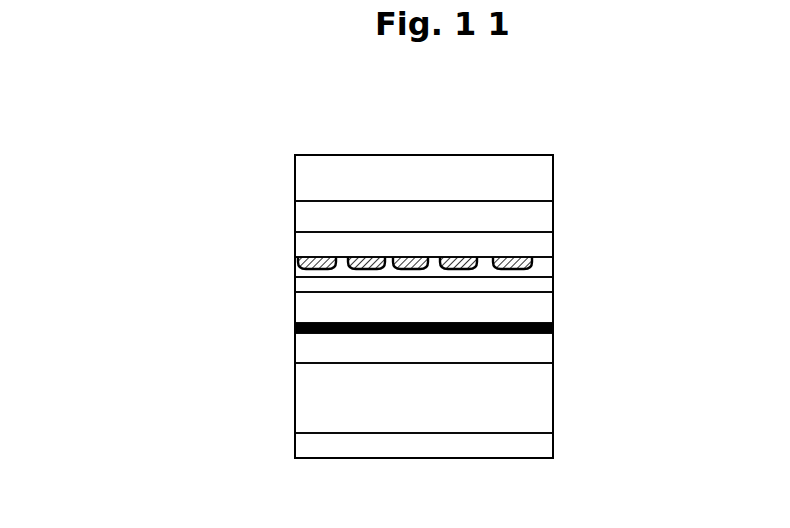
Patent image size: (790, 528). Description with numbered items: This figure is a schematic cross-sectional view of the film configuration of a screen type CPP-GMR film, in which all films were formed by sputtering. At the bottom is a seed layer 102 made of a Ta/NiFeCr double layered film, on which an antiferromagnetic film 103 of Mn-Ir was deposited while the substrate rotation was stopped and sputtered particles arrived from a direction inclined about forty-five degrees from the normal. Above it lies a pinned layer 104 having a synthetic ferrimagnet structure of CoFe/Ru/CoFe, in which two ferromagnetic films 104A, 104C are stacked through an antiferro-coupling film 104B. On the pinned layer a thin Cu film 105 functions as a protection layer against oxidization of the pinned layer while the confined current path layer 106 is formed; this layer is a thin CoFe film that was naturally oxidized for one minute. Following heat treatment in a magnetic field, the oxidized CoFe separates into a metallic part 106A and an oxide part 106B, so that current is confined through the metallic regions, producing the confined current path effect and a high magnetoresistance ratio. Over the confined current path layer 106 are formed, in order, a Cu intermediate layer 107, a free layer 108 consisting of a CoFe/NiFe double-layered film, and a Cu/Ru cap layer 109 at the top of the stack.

The seed layer 102 is at (540, 443).
The antiferromagnetic film 103 is at (532, 387).
The pinned layer 104 is at (150, 255).
The ferromagnetic film 104A is at (302, 345).
The antiferro-coupling film 104B is at (300, 326).
The ferromagnetic film 104C is at (304, 300).
The Cu film 105 is at (547, 283).
The confined current path layer 106 is at (150, 185).
The metallic part 106A is at (302, 263).
The oxide part 106B is at (304, 258).
The intermediate layer 107 is at (548, 238).
The free layer 108 is at (547, 217).
The cap layer 109 is at (530, 163).